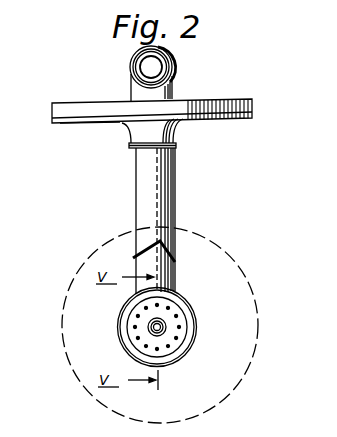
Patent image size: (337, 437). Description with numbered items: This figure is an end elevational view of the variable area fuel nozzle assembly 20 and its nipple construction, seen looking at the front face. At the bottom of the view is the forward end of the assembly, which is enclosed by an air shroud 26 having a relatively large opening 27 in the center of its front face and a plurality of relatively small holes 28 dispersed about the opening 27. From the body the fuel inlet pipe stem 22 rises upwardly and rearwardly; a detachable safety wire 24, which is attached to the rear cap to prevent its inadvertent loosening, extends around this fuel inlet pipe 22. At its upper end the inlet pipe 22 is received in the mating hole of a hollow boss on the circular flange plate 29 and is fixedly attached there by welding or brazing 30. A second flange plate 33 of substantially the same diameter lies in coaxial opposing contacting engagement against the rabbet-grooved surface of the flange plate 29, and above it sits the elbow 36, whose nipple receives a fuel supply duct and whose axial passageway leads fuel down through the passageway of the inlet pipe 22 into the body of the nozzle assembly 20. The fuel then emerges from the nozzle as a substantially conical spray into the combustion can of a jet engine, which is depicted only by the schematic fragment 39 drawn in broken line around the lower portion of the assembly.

The variable area nozzle assembly 20 is at (152, 332).
The fuel inlet pipe stem 22 is at (176, 195).
The detachable safety wire 24 is at (135, 240).
The air shroud 26 is at (176, 312).
The opening 27 is at (163, 335).
The holes 28 is at (180, 333).
The flange plate 29 is at (91, 124).
The welding or brazing 30 is at (133, 148).
The second flange plate 33 is at (62, 110).
The elbow 36 is at (173, 80).
The schematic fragment 39 is at (222, 397).